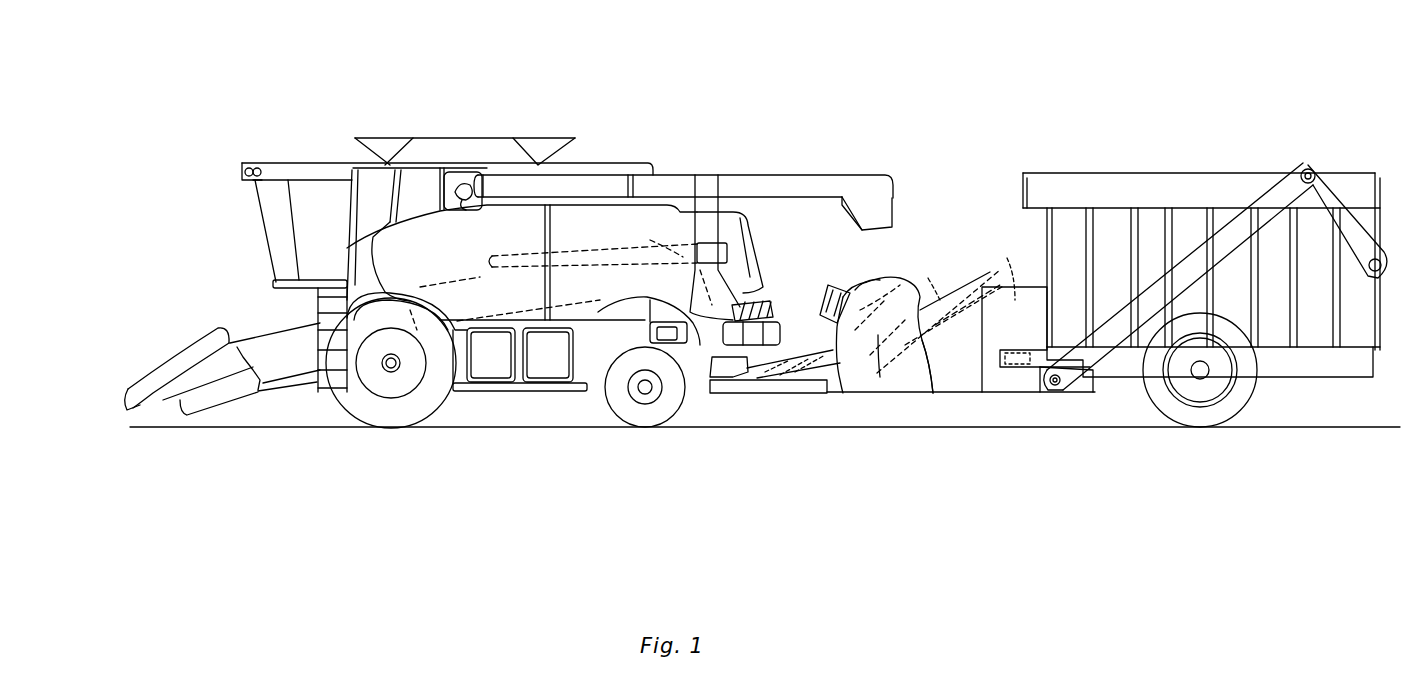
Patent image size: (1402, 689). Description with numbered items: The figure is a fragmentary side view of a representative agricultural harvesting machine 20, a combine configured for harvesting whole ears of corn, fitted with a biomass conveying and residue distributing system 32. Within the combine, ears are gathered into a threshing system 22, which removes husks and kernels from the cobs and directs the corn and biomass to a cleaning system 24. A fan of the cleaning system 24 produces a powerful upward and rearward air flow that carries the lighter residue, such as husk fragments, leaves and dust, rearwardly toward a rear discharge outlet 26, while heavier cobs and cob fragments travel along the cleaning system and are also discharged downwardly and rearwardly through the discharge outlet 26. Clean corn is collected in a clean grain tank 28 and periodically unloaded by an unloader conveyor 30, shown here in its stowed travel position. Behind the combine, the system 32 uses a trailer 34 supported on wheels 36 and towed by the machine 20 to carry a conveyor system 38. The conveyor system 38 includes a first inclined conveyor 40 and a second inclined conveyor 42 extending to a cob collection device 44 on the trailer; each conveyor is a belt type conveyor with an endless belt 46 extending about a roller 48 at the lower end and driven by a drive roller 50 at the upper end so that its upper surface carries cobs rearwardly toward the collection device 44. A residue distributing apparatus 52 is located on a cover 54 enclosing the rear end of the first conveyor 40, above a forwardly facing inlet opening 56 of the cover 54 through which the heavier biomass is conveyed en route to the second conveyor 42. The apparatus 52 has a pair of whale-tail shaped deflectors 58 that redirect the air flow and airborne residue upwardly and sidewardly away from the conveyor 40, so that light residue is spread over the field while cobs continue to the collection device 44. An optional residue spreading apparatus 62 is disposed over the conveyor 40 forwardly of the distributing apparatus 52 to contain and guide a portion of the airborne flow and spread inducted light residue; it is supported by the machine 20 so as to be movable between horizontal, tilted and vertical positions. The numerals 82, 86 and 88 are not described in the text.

The agricultural harvesting machine 20 is at (795, 99).
The threshing system 22 is at (449, 279).
The cleaning system 24 is at (540, 368).
The rear discharge outlet 26 is at (688, 385).
The clean grain tank 28 is at (503, 138).
The unloader conveyor 30 is at (838, 175).
The biomass conveying and residue distributing system 32 is at (913, 182).
The trailer 34 is at (1010, 393).
The wheels 36 is at (1247, 405).
The conveyor system 38 is at (988, 270).
The first inclined conveyor 40 is at (808, 393).
The second inclined conveyor 42 is at (932, 393).
The cob collection device 44 is at (1113, 390).
The endless belt 46 is at (852, 213).
The roller 48 is at (737, 393).
The drive roller 50 is at (857, 460).
The residue distributing apparatus 52 is at (850, 287).
The cover 54 is at (872, 280).
The inlet opening 56 is at (827, 350).
The deflectors 58 is at (830, 290).
The residue spreading apparatus 62 is at (718, 175).
The rear axle platform 82 is at (706, 334).
The flow path 86 is at (922, 300).
The flow path 88 is at (928, 278).